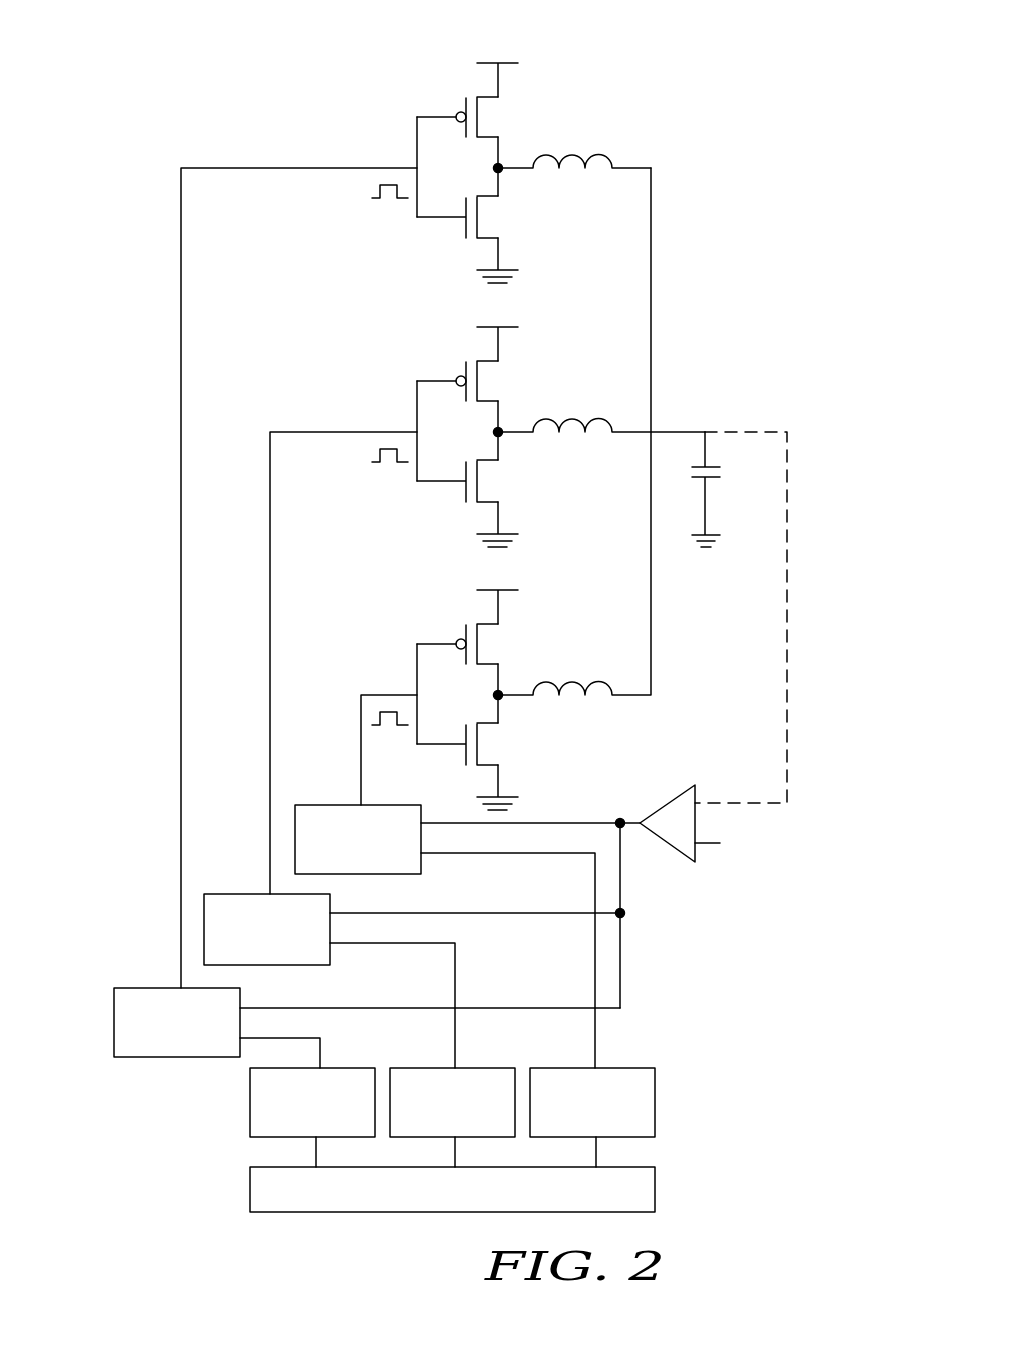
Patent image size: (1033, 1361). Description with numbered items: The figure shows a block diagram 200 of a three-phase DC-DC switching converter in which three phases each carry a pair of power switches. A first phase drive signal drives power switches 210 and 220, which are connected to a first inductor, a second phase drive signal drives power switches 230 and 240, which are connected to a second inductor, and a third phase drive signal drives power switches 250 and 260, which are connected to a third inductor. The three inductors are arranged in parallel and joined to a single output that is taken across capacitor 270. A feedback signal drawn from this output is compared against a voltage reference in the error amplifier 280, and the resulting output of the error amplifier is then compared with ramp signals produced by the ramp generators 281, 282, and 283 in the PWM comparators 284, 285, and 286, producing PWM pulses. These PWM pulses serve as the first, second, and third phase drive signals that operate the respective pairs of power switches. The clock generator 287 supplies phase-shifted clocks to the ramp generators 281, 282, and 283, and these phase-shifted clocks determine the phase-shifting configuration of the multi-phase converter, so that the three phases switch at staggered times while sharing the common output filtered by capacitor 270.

The block diagram 200 is at (267, 65).
The power switch 210 is at (503, 123).
The power switch 220 is at (503, 225).
The power switch 230 is at (503, 387).
The power switch 240 is at (503, 489).
The power switch 250 is at (503, 650).
The power switch 260 is at (503, 752).
The capacitor 270 is at (730, 472).
The error amplifier 280 is at (662, 807).
The ramp generator 281 is at (336, 1068).
The ramp generator 282 is at (477, 1068).
The ramp generator 283 is at (617, 1068).
The PWM comparator 284 is at (170, 988).
The PWM comparator 285 is at (258, 894).
The PWM comparator 286 is at (350, 805).
The clock generator 287 is at (617, 1166).